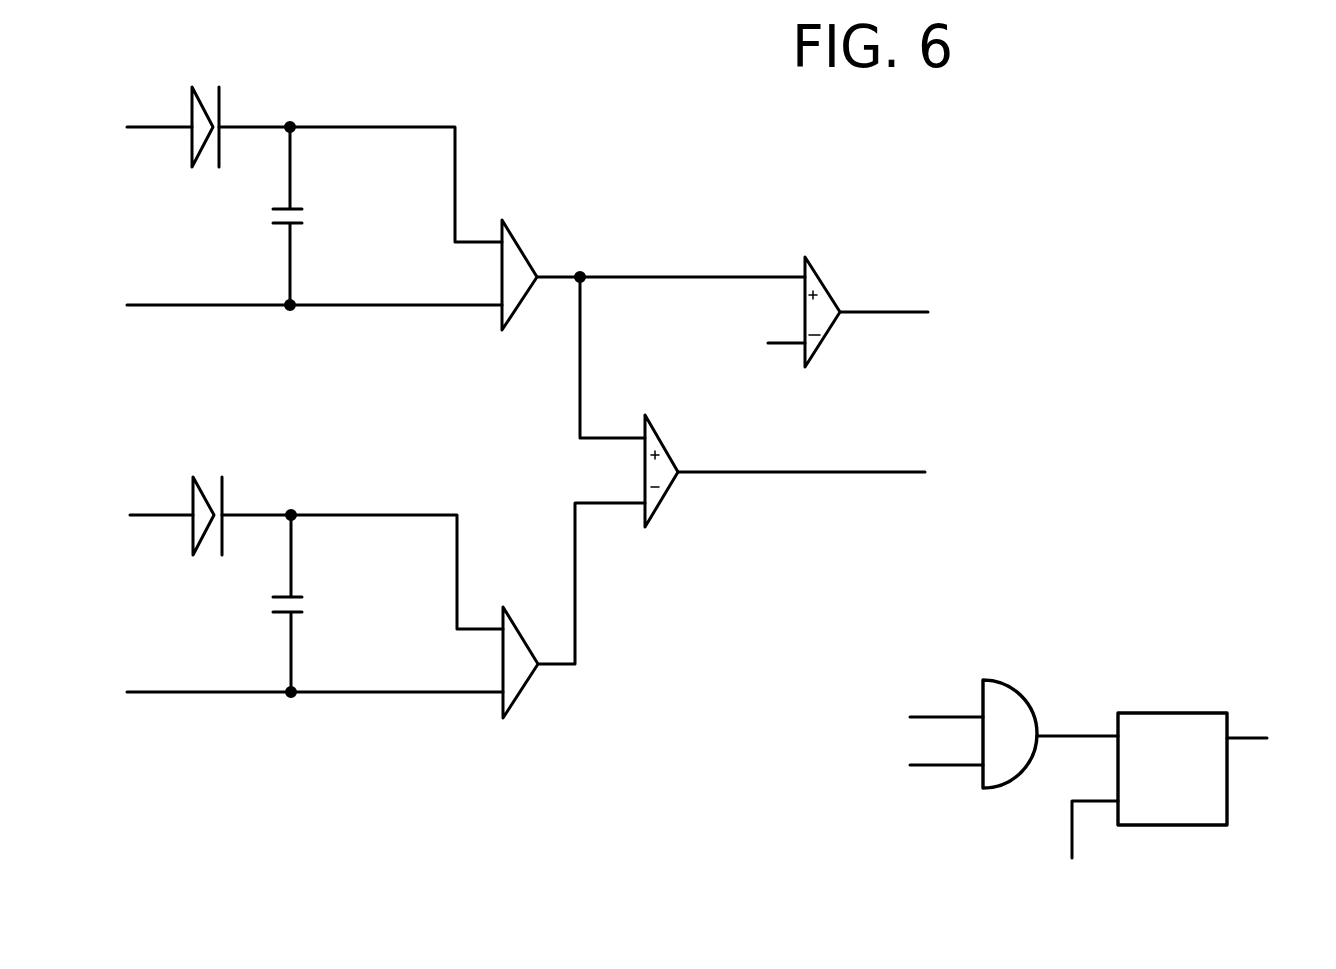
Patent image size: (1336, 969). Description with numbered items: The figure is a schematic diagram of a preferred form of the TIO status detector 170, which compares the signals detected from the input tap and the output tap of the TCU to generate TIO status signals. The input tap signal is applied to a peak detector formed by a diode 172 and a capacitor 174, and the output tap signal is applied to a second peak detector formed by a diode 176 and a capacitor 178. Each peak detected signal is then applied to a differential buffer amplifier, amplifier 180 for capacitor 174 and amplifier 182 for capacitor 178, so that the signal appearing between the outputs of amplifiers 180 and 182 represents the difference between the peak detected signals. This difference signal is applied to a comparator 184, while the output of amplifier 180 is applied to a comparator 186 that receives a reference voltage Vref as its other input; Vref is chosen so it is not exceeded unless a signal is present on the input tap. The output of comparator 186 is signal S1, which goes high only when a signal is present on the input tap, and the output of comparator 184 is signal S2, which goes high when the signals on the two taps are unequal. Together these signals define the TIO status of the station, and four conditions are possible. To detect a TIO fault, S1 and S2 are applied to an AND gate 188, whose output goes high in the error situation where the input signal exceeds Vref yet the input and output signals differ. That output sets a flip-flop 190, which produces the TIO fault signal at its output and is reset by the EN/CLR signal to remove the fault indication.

The TIO status detector 170 is at (633, 57).
The diode 172 is at (200, 100).
The capacitor 174 is at (290, 225).
The diode 176 is at (202, 492).
The capacitor 178 is at (292, 596).
The differential buffer amplifier 180 is at (512, 257).
The differential buffer amplifier 182 is at (515, 683).
The comparator 184 is at (652, 505).
The comparator 186 is at (813, 278).
The AND gate 188 is at (998, 698).
The flip-flop 190 is at (1182, 724).